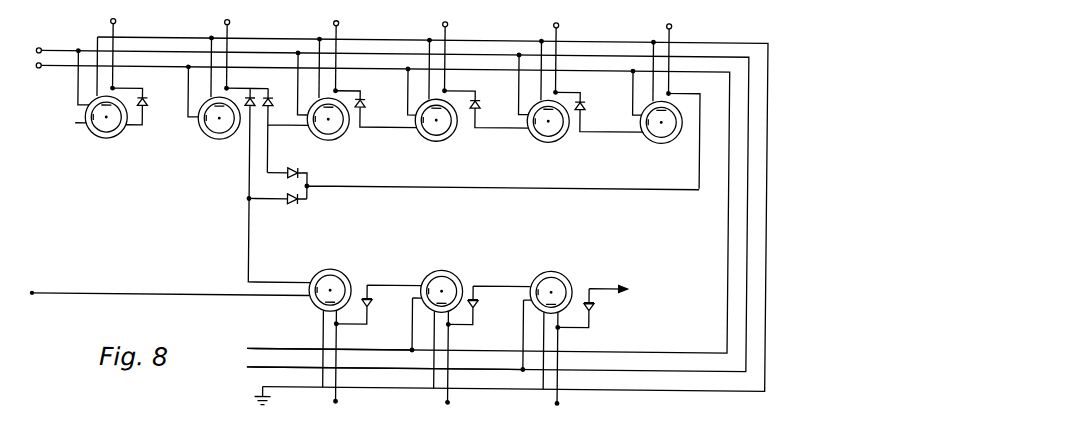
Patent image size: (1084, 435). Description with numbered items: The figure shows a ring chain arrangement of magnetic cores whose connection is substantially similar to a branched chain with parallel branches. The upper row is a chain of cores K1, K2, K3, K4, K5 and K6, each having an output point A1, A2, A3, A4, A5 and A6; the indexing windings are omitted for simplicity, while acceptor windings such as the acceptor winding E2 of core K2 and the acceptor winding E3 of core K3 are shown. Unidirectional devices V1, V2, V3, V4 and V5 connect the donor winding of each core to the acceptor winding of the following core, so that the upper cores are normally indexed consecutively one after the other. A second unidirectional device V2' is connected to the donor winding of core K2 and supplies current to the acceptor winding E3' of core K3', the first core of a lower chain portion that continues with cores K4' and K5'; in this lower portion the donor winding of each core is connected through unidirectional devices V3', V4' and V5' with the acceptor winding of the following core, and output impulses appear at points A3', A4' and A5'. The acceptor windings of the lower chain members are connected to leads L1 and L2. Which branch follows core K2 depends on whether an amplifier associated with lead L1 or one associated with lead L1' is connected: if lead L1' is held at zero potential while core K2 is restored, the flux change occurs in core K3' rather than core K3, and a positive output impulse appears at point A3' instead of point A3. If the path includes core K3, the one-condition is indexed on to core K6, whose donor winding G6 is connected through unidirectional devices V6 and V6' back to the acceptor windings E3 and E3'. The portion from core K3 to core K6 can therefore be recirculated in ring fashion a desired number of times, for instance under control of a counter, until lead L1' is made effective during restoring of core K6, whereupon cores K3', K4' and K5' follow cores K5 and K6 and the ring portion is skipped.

The output point A1 is at (123, 50).
The output point A2 is at (237, 51).
The output point A3 is at (346, 53).
The output point A4 is at (455, 54).
The output point A5 is at (566, 56).
The output point A6 is at (683, 103).
The core K1 is at (110, 138).
The core K2 is at (220, 139).
The core K3 is at (335, 102).
The core K4 is at (438, 103).
The core K5 is at (550, 105).
The core K6 is at (674, 134).
The unidirectional device V1 is at (139, 106).
The unidirectional device V2 is at (285, 128).
The second unidirectional device V2' is at (268, 177).
The unidirectional device V3 is at (376, 109).
The unidirectional device V4 is at (486, 109).
The unidirectional device V5 is at (599, 112).
The unidirectional device V6 is at (483, 178).
The unidirectional device V6' is at (277, 214).
The acceptor winding E2 is at (184, 96).
The acceptor winding E3 is at (294, 90).
The donor winding G6 is at (641, 92).
The lead L1' is at (169, 283).
The acceptor winding E3' is at (297, 273).
The core K3' is at (332, 327).
The core K4' is at (437, 328).
The core K5' is at (548, 329).
The unidirectional device V3' is at (377, 310).
The unidirectional device V4' is at (488, 311).
The unidirectional device V5' is at (592, 307).
The output point A3' is at (338, 419).
The output point A4' is at (441, 420).
The output point A5' is at (561, 421).
The lead L2 is at (318, 349).
The lead L1 is at (373, 371).